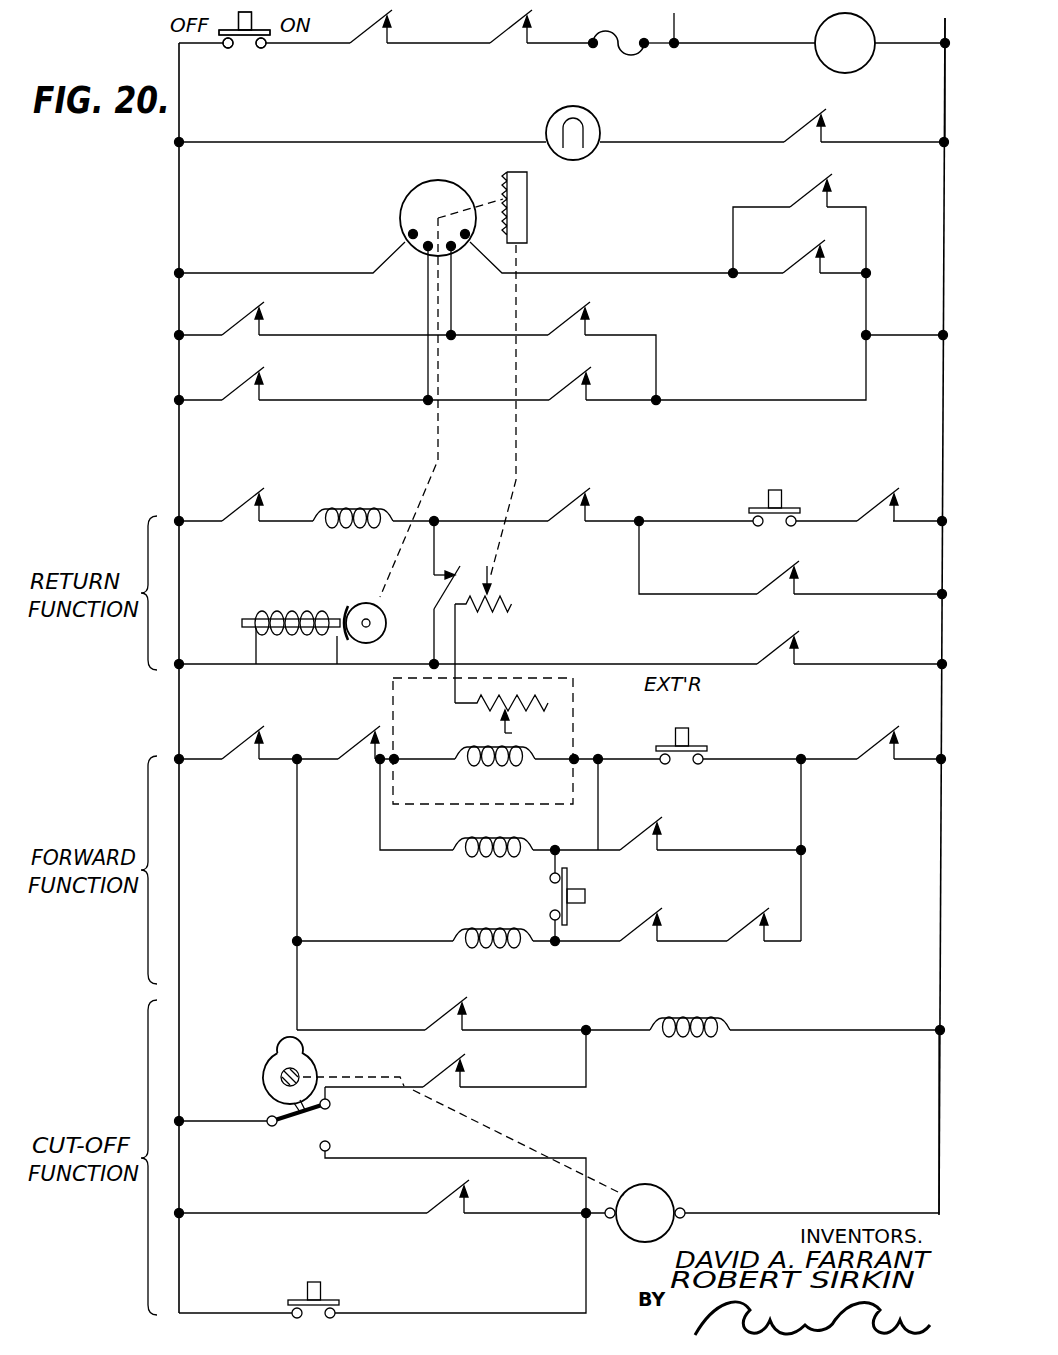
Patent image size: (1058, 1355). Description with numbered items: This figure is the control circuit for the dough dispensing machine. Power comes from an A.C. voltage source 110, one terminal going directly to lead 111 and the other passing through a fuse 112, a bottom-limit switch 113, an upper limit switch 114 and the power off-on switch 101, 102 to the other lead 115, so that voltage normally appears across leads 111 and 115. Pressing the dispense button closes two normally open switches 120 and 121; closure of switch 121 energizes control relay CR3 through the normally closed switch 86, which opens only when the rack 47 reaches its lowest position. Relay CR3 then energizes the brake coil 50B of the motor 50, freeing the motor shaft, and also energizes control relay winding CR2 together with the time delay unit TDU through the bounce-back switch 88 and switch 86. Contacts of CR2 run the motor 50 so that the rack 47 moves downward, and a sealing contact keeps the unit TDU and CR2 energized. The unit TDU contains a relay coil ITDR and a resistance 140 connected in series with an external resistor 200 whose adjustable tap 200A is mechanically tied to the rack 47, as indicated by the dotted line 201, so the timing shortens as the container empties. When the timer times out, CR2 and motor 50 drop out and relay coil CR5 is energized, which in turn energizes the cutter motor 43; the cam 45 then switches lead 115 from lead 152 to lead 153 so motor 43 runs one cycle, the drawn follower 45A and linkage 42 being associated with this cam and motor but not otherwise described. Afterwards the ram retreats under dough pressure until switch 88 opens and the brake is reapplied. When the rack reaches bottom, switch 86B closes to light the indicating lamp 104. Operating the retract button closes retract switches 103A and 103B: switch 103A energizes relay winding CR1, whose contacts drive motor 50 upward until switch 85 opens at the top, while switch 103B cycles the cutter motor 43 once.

The power off-on switch 101 is at (246, 48).
The power off-on switch 102 is at (244, 30).
The upper limit switch 114 is at (370, 48).
The bottom-limit switch 113 is at (506, 44).
The fuse 112 is at (635, 55).
The A.C. voltage source 110 is at (818, 59).
The lead 111 is at (945, 86).
The warning or indicating lamp 104 is at (593, 155).
The switch 86B is at (806, 122).
The motor 50 is at (412, 186).
The rack 47 is at (528, 200).
The lead 115 is at (179, 206).
The dotted line 201 is at (522, 487).
The switch 85 is at (581, 526).
The retract switch 103A is at (774, 523).
The potentiometer wiper 200A is at (484, 582).
The external resistor 200 is at (483, 649).
The brake coil 50B is at (284, 614).
The resistance 140 is at (522, 700).
The switch 120 is at (683, 730).
The switch 86 is at (876, 752).
The switch 121 is at (553, 892).
The bounce-back switch 88 is at (745, 940).
The cam 45 is at (264, 1076).
The cam follower lever 45A is at (322, 1108).
The lead 152 is at (402, 1088).
The mechanical linkage 42 is at (486, 1123).
The lead 153 is at (380, 1160).
The cutter motor 43 is at (663, 1198).
The retract switch 103B is at (331, 1295).
The control relay winding CR1 is at (357, 506).
The control relay winding CR2 is at (493, 836).
The control relay CR3 is at (476, 930).
The relay coil CR5 is at (720, 1020).
The relay coil ITDR is at (489, 778).
The time delay unit TDU is at (580, 723).